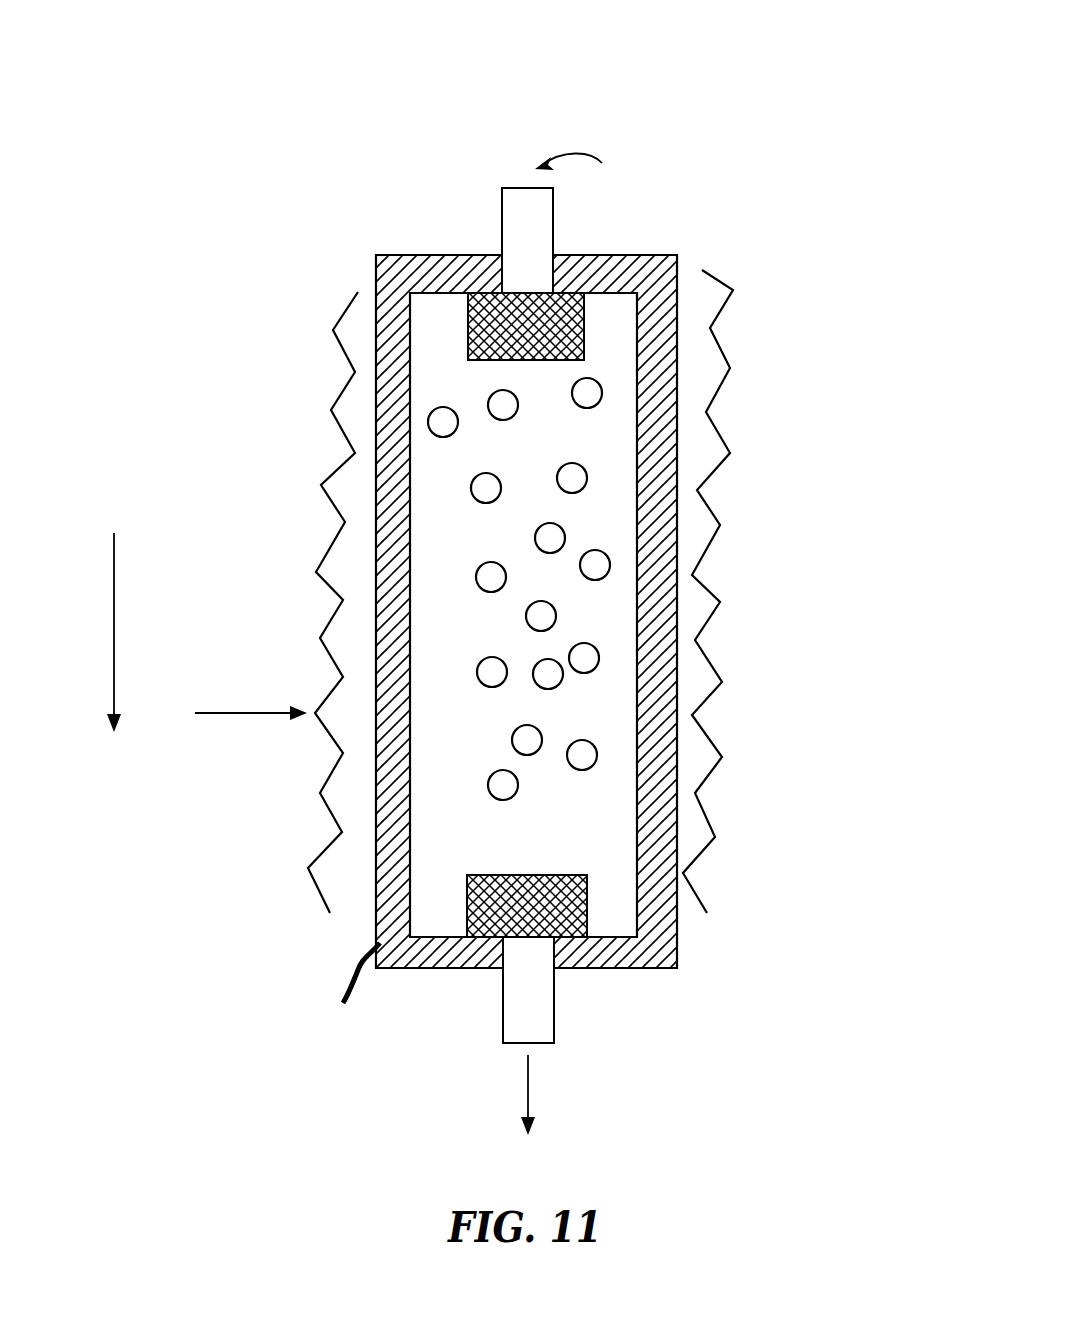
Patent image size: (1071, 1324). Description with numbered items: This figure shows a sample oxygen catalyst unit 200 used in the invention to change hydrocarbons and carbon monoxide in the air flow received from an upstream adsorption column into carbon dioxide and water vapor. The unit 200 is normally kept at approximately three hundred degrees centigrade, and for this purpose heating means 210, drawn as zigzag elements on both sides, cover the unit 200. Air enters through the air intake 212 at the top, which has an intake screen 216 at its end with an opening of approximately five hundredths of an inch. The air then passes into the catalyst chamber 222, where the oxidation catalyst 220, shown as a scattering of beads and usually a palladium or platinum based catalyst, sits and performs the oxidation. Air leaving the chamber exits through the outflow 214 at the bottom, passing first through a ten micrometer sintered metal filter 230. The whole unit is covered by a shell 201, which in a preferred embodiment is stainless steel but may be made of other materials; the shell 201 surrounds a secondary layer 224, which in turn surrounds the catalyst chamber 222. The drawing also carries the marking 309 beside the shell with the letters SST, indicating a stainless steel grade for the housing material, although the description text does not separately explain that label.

The oxygen catalyst unit 200 is at (660, 96).
The shell 201 is at (376, 275).
The heating means 210 is at (322, 397).
The air intake 212 is at (500, 222).
The outflow 214 is at (503, 995).
The intake screen 216 is at (468, 333).
The oxidation catalyst 220 is at (610, 567).
The catalyst chamber 222 is at (492, 849).
The secondary layer 224 is at (339, 979).
The sintered metal filter 230 is at (587, 900).
The stainless steel housing material (309 SST) 309 is at (677, 965).